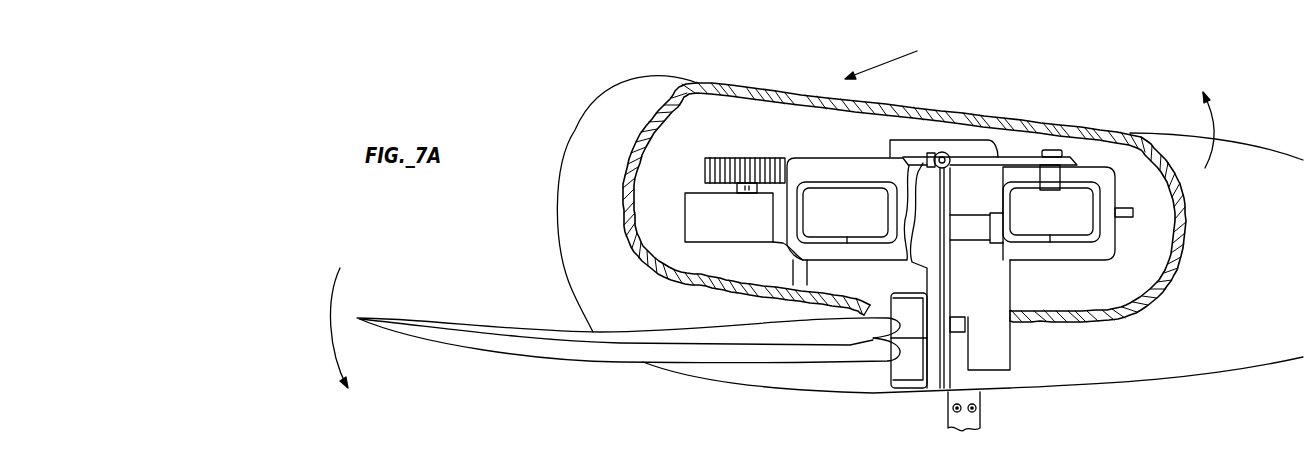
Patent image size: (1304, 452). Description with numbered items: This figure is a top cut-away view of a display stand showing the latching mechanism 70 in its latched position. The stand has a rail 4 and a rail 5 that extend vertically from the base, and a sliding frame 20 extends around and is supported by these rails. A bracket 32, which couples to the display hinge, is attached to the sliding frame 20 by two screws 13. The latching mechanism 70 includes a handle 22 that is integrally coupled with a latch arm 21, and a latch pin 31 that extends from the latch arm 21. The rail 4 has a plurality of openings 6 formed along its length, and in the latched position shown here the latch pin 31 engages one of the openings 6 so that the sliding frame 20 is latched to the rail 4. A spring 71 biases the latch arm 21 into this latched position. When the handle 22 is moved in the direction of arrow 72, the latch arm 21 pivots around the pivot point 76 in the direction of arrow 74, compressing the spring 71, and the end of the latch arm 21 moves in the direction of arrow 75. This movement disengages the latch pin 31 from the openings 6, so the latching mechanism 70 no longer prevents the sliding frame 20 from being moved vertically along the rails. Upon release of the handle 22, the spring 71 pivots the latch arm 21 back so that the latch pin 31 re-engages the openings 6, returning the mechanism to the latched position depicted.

The rail 4 is at (1093, 178).
The rail 5 is at (823, 182).
The openings 6 is at (1046, 199).
The screws 13 is at (951, 415).
The sliding frame 20 is at (856, 181).
The latch arm 21 is at (1035, 156).
The handle 22 is at (462, 345).
The latch pin 31 is at (1050, 184).
The bracket 32 is at (980, 399).
The latching mechanism 70 is at (897, 137).
The spring 71 is at (968, 213).
The arrow 72 is at (330, 328).
The arrow 74 is at (875, 63).
The arrow 75 is at (1210, 133).
The pivot point 76 is at (945, 152).